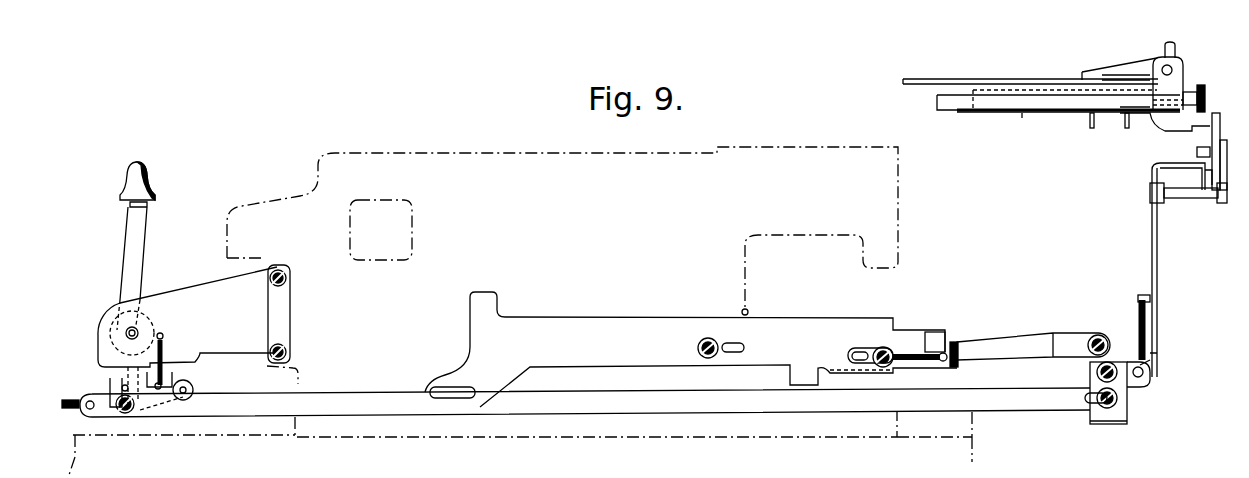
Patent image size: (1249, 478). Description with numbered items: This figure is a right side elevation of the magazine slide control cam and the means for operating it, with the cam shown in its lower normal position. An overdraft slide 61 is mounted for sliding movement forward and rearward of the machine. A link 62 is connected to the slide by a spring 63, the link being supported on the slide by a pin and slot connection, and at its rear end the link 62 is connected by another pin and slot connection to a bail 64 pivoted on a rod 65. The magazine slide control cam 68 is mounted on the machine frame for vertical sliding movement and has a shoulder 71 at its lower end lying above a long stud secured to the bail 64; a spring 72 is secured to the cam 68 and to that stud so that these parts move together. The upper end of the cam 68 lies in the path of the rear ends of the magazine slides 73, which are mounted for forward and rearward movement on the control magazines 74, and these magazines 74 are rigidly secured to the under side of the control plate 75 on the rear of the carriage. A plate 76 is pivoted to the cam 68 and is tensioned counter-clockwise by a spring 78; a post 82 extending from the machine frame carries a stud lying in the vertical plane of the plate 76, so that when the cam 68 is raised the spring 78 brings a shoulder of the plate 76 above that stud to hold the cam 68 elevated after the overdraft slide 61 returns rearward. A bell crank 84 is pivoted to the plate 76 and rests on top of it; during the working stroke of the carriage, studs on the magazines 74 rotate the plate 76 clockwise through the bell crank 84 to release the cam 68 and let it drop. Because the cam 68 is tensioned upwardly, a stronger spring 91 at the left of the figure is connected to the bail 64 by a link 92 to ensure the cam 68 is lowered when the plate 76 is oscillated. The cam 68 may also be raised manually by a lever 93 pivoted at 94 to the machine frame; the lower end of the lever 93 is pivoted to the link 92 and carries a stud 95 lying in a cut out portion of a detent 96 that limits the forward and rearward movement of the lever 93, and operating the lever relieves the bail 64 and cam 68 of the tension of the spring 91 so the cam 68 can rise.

The overdraft slide 61 is at (580, 327).
The link 62 is at (992, 352).
The spring 63 is at (926, 348).
The bail 64 is at (1122, 414).
The rod 65 is at (1093, 368).
The magazine slide control cam 68 is at (1153, 238).
The shoulder 71 is at (1153, 353).
The spring 72 is at (1138, 323).
The magazine slides 73 is at (1162, 120).
The control magazines 74 is at (1010, 100).
The control plate 75 is at (1000, 80).
The plate 76 is at (1228, 190).
The spring 78 is at (1210, 178).
The post 82 is at (1173, 193).
The bell crank 84 is at (1213, 118).
The spring 91 is at (75, 409).
The link 92 is at (808, 403).
The lever 93 is at (133, 184).
The pivot 94 is at (128, 333).
The stud 95 is at (118, 378).
The detent 96 is at (167, 373).